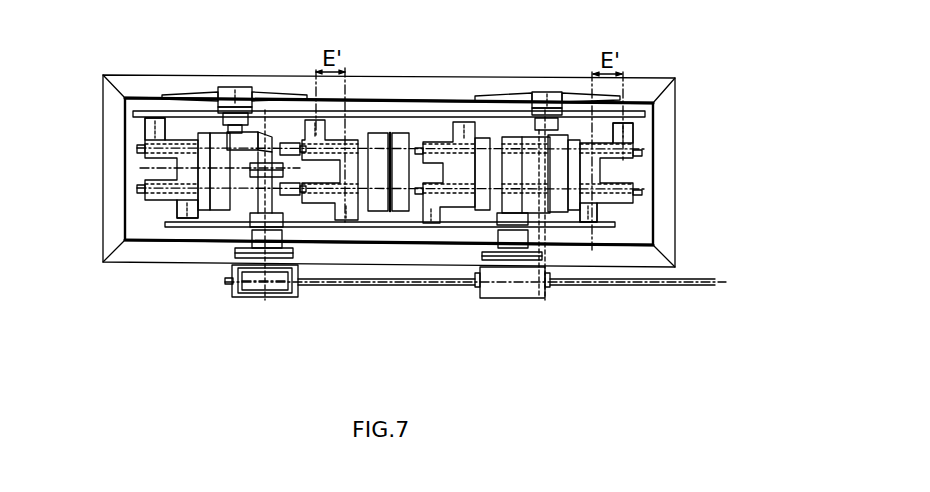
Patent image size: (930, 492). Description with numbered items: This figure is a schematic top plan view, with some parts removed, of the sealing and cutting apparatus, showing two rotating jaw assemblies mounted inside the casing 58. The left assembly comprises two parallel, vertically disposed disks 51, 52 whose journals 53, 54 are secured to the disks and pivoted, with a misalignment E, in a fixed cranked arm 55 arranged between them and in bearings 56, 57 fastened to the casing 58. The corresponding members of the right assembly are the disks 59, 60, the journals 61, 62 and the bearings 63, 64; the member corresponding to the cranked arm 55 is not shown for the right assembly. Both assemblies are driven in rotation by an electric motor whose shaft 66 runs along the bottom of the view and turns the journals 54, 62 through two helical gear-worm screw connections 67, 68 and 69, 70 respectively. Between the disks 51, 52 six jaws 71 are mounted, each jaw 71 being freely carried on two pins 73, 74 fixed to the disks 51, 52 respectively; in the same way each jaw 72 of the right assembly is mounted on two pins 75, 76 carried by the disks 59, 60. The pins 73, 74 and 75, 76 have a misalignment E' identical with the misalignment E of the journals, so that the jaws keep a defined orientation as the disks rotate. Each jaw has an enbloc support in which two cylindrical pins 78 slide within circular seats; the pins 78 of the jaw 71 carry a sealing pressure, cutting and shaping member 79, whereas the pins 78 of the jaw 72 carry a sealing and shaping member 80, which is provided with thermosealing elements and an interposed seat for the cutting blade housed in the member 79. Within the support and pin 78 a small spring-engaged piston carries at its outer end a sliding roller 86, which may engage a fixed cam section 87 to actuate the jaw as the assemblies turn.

The disk 51 is at (140, 110).
The disk 52 is at (340, 226).
The journal 53 is at (238, 120).
The journal 54 is at (245, 208).
The fixed cranked arm 55 is at (264, 135).
The bearing 56 is at (223, 86).
The bearing 57 is at (293, 250).
The casing 58 is at (110, 229).
The disk 59 is at (635, 110).
The disk 60 is at (600, 240).
The journal 61 is at (527, 91).
The journal 62 is at (497, 246).
The bearing 63 is at (560, 91).
The bearing 64 is at (553, 260).
The shaft 66 is at (370, 286).
The helical gear-worm screw connection 67 is at (288, 297).
The helical gear-worm screw connection 68 is at (258, 297).
The helical gear-worm screw connection 69 is at (502, 298).
The helical gear-worm screw connection 70 is at (512, 280).
The jaw 71 is at (150, 162).
The jaw 72 is at (438, 140).
The pin 73 is at (160, 128).
The pin 74 is at (182, 208).
The pin 75 is at (625, 132).
The pin 76 is at (612, 215).
The cylindrical pin 78 is at (203, 142).
The sealing pressure, cutting and shaping member 79 is at (381, 131).
The sealing and shaping member 80 is at (400, 131).
The sliding roller 86 is at (642, 153).
The fixed cam section 87 is at (292, 145).